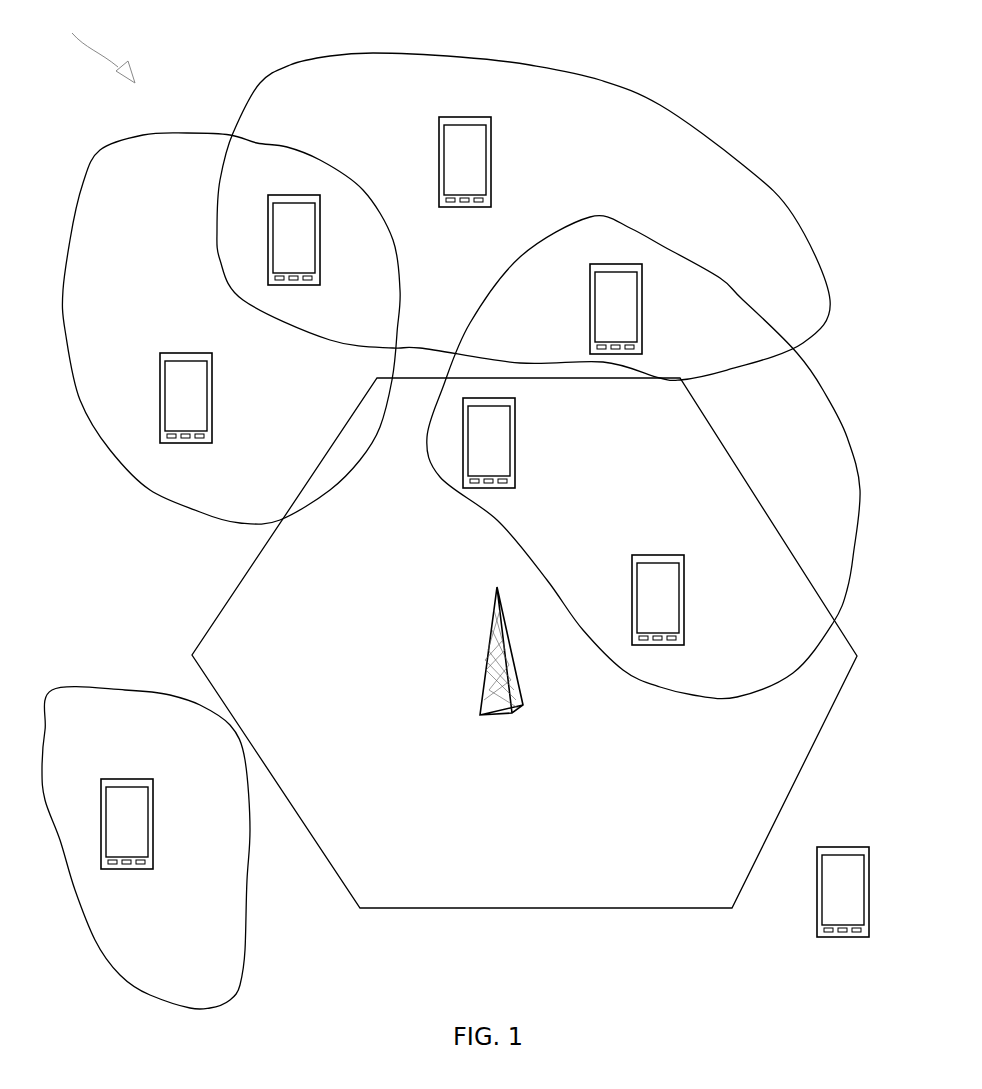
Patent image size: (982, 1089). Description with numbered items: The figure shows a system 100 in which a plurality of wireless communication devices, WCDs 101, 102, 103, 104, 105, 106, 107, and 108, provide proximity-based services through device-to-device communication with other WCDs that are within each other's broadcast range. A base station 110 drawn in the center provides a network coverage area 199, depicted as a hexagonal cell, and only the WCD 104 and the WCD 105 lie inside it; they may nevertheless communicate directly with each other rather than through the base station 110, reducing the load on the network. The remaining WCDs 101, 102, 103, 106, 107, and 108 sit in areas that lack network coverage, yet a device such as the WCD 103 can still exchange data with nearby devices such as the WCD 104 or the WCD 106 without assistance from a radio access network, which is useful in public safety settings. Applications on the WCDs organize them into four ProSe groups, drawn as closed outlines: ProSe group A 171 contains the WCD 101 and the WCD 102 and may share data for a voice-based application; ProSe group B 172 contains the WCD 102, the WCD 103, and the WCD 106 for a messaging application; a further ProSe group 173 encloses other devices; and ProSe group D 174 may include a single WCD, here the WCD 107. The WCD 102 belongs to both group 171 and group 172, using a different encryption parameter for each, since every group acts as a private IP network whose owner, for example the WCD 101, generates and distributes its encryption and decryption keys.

The system 100 is at (92, 46).
The WCD 101 is at (195, 353).
The WCD 102 is at (300, 200).
The WCD 103 is at (598, 325).
The WCD 104 is at (512, 435).
The WCD 105 is at (668, 555).
The WCD 106 is at (437, 168).
The WCD 107 is at (115, 779).
The WCD 108 is at (850, 847).
The base station 110 is at (479, 656).
The ProSe group A 171 is at (92, 167).
The ProSe group B 172 is at (817, 398).
The ProSe group 173 is at (454, 58).
The ProSe group D 174 is at (124, 690).
The network coverage area 199 is at (201, 646).